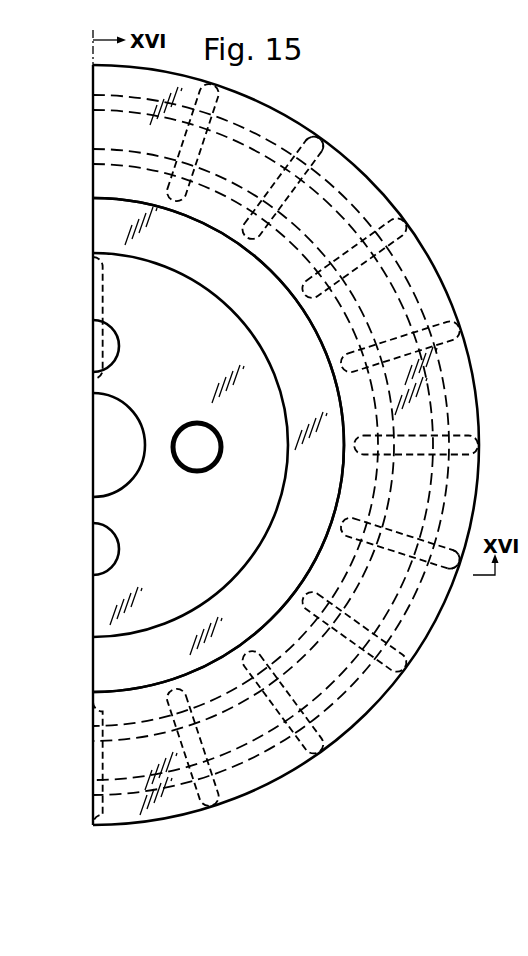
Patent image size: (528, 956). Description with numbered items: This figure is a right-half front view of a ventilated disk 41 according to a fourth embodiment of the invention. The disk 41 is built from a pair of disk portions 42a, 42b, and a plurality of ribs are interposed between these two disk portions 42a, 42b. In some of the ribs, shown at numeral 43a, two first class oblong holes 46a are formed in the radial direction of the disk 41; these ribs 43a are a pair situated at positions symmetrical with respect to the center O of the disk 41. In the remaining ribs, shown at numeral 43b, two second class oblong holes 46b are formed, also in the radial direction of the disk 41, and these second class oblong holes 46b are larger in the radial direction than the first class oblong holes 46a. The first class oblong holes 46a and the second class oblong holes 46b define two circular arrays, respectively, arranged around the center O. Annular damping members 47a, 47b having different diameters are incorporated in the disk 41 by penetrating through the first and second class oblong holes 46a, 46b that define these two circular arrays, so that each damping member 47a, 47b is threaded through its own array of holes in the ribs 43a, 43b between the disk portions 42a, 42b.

The disk 41 is at (298, 445).
The disk portion 42a is at (238, 381).
The disk portion 42b is at (238, 381).
The rib 43a is at (484, 530).
The rib 43b is at (358, 149).
The first class oblong hole 46a is at (405, 517).
The second class oblong hole 46b is at (271, 182).
The annular damping member 47a is at (295, 445).
The annular damping member 47b is at (201, 445).
The center O is at (99, 445).